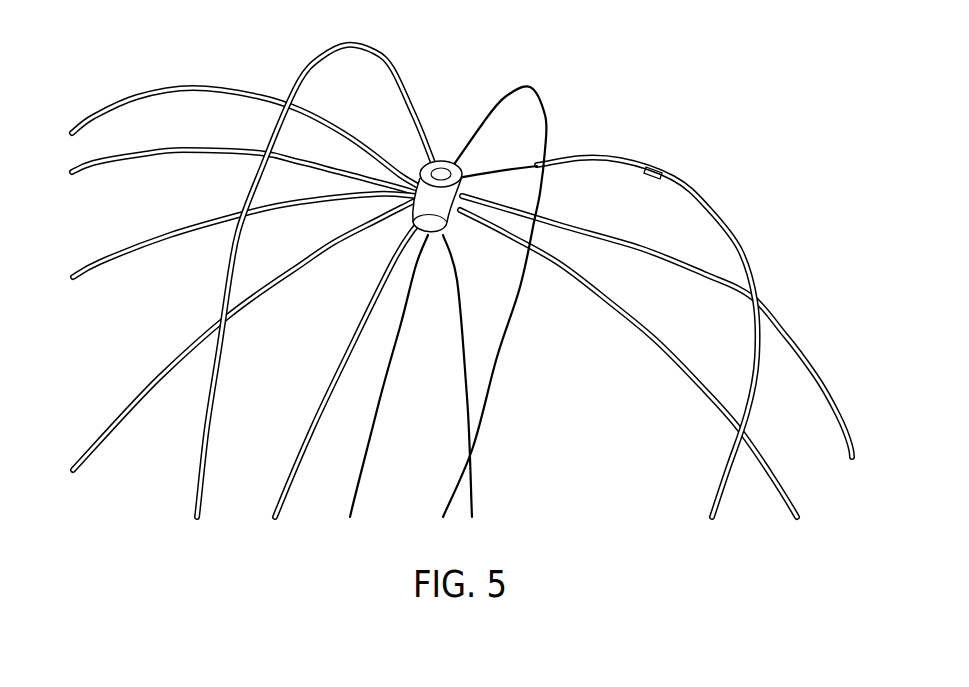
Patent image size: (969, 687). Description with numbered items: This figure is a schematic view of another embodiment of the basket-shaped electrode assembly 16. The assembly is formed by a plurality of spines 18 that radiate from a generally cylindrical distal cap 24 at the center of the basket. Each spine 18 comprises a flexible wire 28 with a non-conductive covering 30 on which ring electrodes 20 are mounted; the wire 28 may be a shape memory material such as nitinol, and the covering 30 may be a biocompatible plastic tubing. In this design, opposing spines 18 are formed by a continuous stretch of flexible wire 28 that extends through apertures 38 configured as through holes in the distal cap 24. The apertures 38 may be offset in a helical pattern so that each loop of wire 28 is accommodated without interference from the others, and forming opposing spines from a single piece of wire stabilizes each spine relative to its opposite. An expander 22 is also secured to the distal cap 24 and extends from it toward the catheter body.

The basket-shaped electrode assembly 16 is at (154, 26).
The spine 18 is at (766, 221).
The electrode 20 is at (618, 157).
The expander 22 is at (383, 412).
The distal cap 24 is at (424, 169).
The flexible wire 28 is at (497, 170).
The non-conductive covering 30 is at (656, 171).
The aperture 38 is at (439, 162).